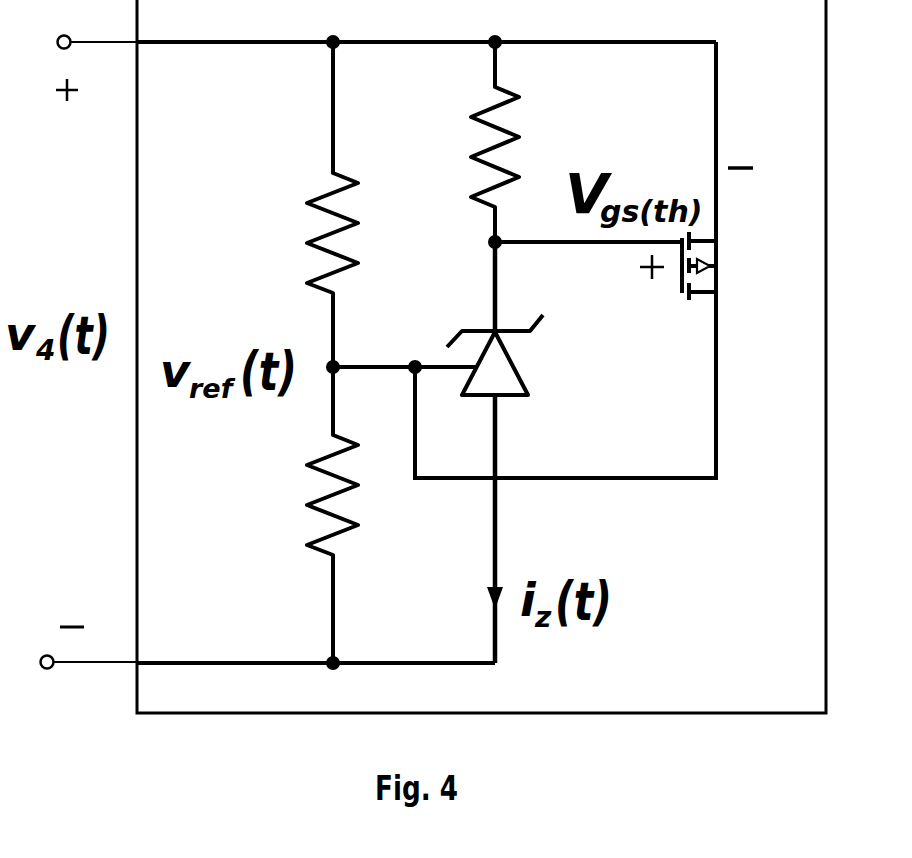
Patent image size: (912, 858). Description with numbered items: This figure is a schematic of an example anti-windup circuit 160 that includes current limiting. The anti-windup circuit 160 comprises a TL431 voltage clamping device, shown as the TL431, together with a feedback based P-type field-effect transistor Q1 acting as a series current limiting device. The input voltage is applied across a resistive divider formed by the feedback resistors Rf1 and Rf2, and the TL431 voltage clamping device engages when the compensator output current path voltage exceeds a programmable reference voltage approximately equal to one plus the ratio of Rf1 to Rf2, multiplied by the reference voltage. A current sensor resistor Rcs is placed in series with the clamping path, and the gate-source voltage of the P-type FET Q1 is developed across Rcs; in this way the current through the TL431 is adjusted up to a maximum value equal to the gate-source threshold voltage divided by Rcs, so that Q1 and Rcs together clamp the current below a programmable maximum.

The anti-windup circuit 160 is at (481, 356).
The feedback resistor Rf1 is at (290, 204).
The feedback resistor Rf2 is at (286, 515).
The current sense resistor Rcs is at (454, 142).
The voltage clamping device TL431 is at (552, 452).
The P-type field-effect transistor Q1 is at (650, 268).